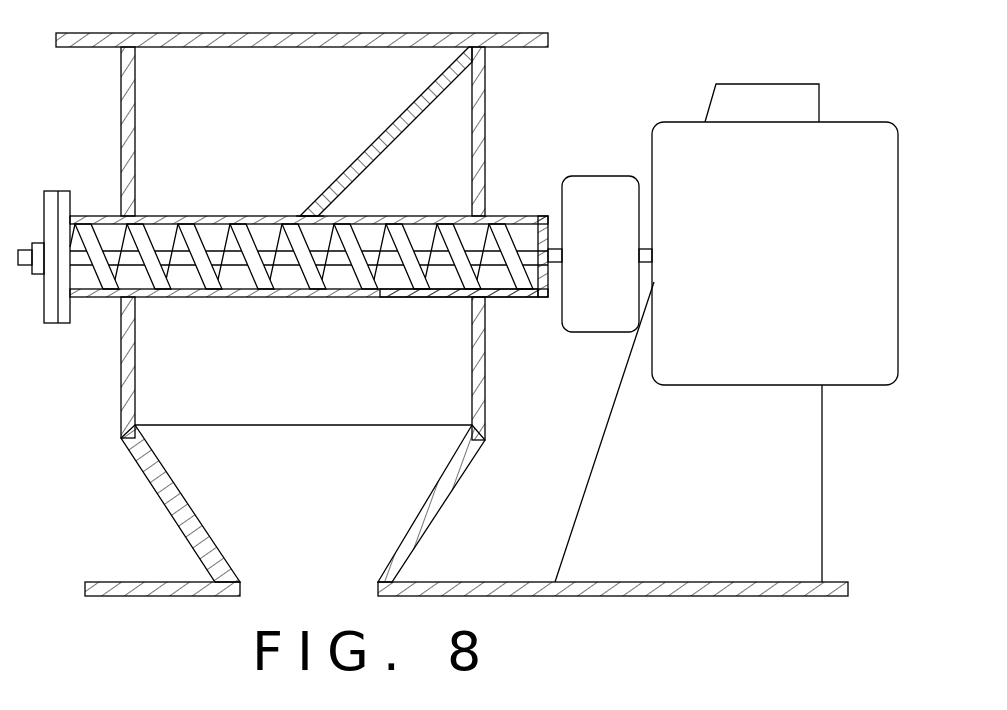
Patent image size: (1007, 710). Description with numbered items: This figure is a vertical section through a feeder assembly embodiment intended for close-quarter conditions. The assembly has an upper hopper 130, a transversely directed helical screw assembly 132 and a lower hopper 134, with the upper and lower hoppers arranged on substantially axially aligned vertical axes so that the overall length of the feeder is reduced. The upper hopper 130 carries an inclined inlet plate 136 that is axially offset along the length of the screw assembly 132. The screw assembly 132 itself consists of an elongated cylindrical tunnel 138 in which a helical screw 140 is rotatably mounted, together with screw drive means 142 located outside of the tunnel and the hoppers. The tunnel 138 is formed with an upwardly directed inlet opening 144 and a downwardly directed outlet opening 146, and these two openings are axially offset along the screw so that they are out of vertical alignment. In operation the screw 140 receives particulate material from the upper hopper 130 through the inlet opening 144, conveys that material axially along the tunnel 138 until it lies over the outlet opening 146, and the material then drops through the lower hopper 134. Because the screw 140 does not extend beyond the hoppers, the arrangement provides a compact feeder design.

The upper hopper 130 is at (120, 160).
The helical screw assembly 132 is at (238, 338).
The lower hopper 134 is at (152, 488).
The inclined inlet plate 136 is at (384, 148).
The elongated cylindrical tunnel 138 is at (301, 216).
The helical screw 140 is at (370, 297).
The screw drive means 142 is at (652, 126).
The inlet opening 144 is at (189, 216).
The outlet opening 146 is at (408, 297).